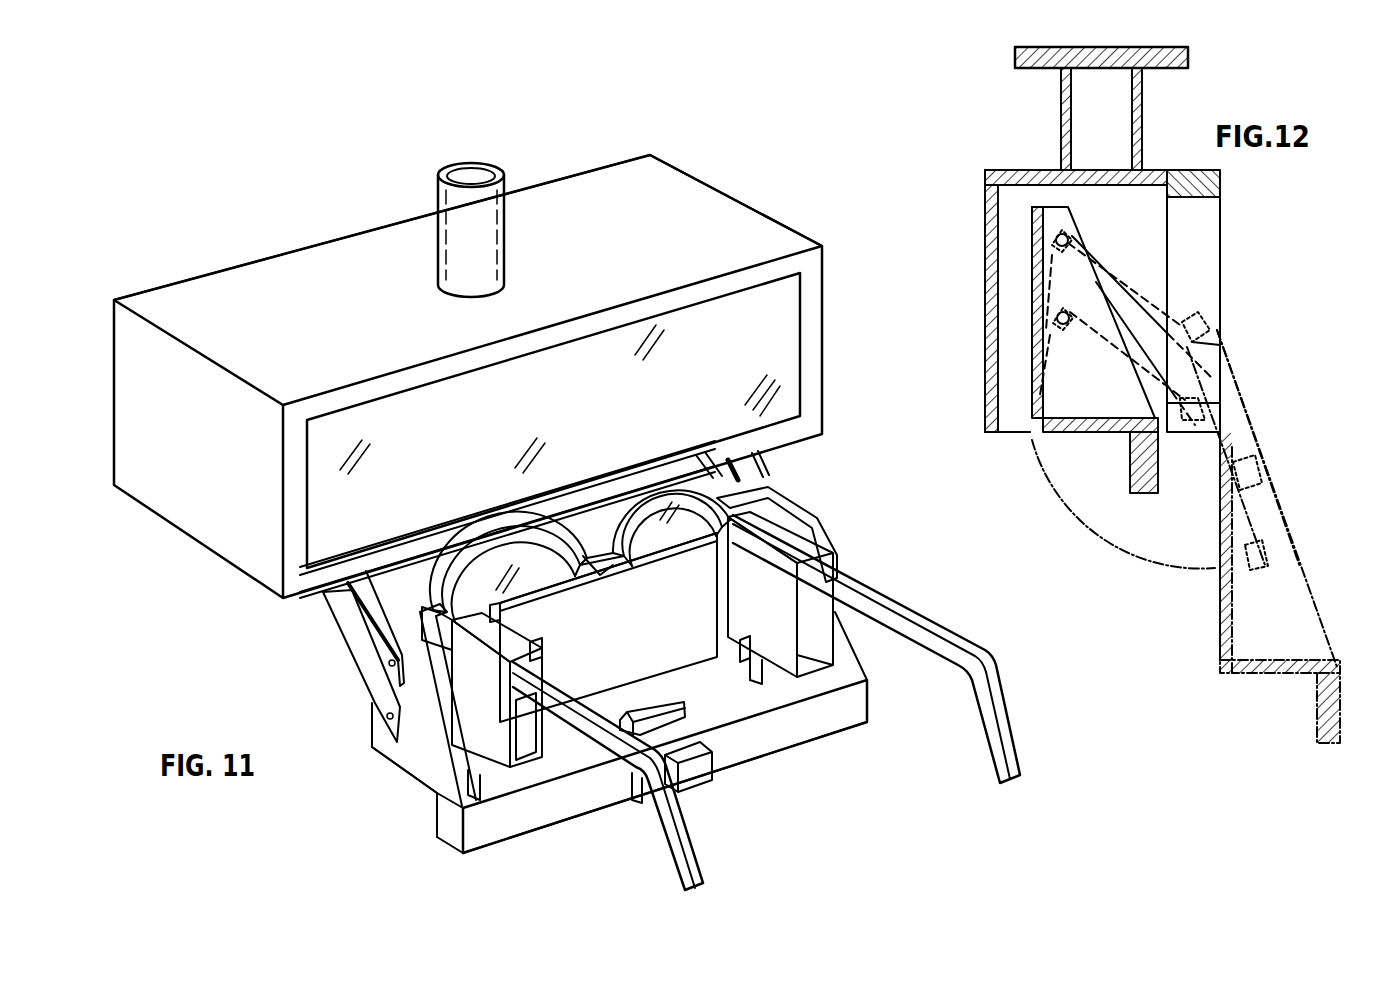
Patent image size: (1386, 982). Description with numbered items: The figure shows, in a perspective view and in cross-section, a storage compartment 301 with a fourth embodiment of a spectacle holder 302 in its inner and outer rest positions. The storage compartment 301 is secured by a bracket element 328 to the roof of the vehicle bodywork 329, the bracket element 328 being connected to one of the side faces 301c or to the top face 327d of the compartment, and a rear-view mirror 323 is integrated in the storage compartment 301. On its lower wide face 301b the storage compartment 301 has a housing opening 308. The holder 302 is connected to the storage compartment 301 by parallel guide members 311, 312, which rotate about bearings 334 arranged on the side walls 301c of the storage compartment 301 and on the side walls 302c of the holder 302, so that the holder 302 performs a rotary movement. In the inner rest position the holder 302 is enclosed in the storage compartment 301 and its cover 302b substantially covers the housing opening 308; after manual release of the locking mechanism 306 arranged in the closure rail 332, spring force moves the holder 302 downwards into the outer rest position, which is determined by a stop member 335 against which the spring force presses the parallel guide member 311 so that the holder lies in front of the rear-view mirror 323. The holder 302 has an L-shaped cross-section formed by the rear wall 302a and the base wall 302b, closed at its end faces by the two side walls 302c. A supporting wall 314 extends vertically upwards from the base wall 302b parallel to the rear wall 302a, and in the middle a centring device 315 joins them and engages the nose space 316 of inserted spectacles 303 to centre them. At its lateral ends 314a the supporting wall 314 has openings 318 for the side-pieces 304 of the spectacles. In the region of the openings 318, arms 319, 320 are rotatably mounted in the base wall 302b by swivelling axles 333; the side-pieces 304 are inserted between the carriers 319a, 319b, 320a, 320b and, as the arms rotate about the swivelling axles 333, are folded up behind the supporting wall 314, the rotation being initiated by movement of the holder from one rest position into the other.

In FIG. 11, the storage compartment 301 is at (229, 572).
In FIG. 12, the storage compartment 301 is at (1005, 232).
In FIG. 12, the lower wide face 301b is at (1006, 426).
In FIG. 11, the side walls 301c is at (770, 215).
In FIG. 11, the holder 302 is at (372, 740).
In FIG. 12, the holder 302 is at (1240, 625).
In FIG. 11, the rear wall 302a is at (378, 567).
In FIG. 12, the rear wall 302a is at (1220, 600).
In FIG. 11, the base wall 302b is at (432, 806).
In FIG. 12, the base wall 302b is at (1080, 436).
In FIG. 11, the side walls 302c is at (415, 762).
In FIG. 12, the side walls 302c is at (1310, 595).
In FIG. 11, the spectacles 303 is at (500, 570).
In FIG. 11, the side-pieces 304 is at (1000, 740).
In FIG. 11, the locking mechanism 306 is at (650, 700).
In FIG. 12, the housing opening 308 is at (1020, 430).
In FIG. 11, the parallel guide member 311 is at (330, 612).
In FIG. 12, the parallel guide member 311 is at (1130, 292).
In FIG. 11, the parallel guide member 312 is at (358, 650).
In FIG. 12, the parallel guide member 312 is at (1110, 354).
In FIG. 11, the supporting wall 314 is at (700, 650).
In FIG. 11, the lateral ends 314a is at (510, 620).
In FIG. 11, the centring device 315 is at (598, 570).
In FIG. 11, the nose space 316 is at (616, 500).
In FIG. 11, the openings 318 is at (490, 610).
In FIG. 11, the arm 319 is at (540, 765).
In FIG. 11, the carrier 319a is at (510, 700).
In FIG. 11, the carrier 319b is at (545, 650).
In FIG. 11, the arm 320 is at (822, 670).
In FIG. 11, the carrier 320a is at (795, 620).
In FIG. 11, the carrier 320b is at (820, 545).
In FIG. 11, the rear-view mirror 323 is at (780, 357).
In FIG. 12, the rear-view mirror 323 is at (1205, 242).
In FIG. 11, the top face 327d is at (213, 290).
In FIG. 12, the top face 327d is at (1035, 172).
In FIG. 11, the bracket element 328 is at (500, 240).
In FIG. 12, the bracket element 328 is at (1145, 110).
In FIG. 12, the vehicle bodywork 329 is at (1190, 60).
In FIG. 11, the closure rail 332 is at (795, 740).
In FIG. 12, the closure rail 332 is at (1335, 705).
In FIG. 11, the swivelling axles 333 is at (752, 682).
In FIG. 12, the bearings 334 is at (1070, 240).
In FIG. 12, the stop member 335 is at (1220, 345).